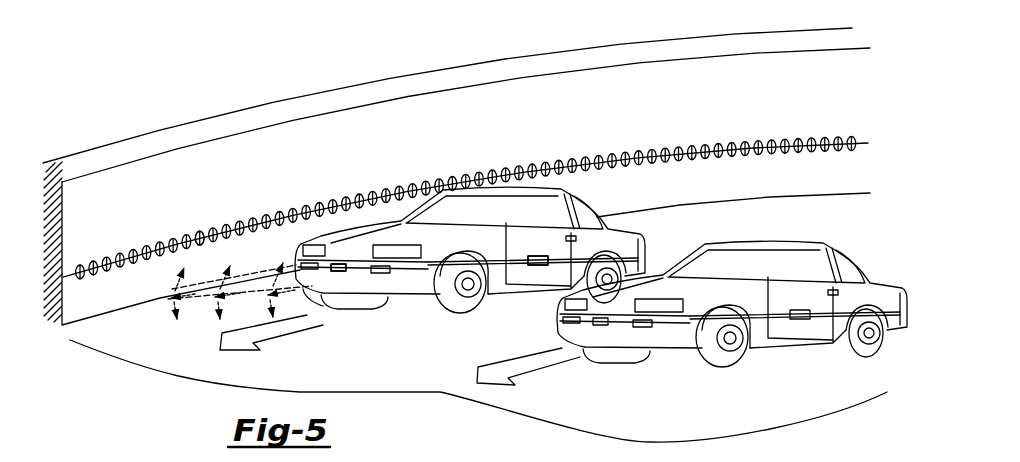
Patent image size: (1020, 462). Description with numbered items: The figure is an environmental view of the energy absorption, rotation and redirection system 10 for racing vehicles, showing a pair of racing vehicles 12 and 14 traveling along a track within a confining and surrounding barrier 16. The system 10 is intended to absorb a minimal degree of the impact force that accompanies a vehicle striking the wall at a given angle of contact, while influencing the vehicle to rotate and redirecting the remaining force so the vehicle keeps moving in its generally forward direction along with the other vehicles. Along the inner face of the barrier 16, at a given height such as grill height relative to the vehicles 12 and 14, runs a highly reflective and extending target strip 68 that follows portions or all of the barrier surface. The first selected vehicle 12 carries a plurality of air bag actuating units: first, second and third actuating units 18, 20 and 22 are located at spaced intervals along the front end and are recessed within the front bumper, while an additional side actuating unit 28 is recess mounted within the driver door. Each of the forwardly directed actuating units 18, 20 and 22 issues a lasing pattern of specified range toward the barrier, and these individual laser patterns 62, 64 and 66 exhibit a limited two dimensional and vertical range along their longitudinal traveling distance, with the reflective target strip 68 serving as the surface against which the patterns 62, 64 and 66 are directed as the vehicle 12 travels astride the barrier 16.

The energy absorption, rotation and redirection system 10 is at (584, 43).
The first racing vehicle 12 is at (598, 199).
The second racing vehicle 14 is at (864, 254).
The surrounding barrier 16 is at (234, 136).
The first air bag actuating unit 18 is at (283, 238).
The second air bag actuating unit 20 is at (343, 264).
The third air bag actuating unit 22 is at (397, 284).
The side air bag actuating unit 28 is at (539, 268).
The first laser pattern 62 is at (163, 315).
The second laser pattern 64 is at (206, 323).
The third laser pattern 66 is at (291, 314).
The target strip 68 is at (196, 250).